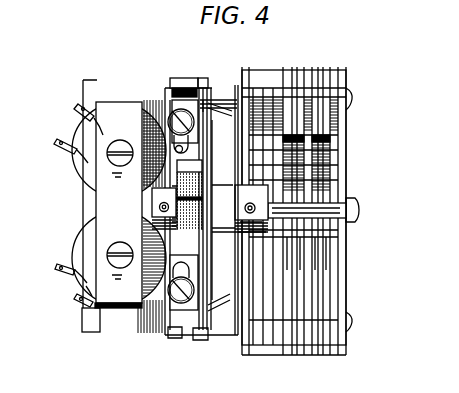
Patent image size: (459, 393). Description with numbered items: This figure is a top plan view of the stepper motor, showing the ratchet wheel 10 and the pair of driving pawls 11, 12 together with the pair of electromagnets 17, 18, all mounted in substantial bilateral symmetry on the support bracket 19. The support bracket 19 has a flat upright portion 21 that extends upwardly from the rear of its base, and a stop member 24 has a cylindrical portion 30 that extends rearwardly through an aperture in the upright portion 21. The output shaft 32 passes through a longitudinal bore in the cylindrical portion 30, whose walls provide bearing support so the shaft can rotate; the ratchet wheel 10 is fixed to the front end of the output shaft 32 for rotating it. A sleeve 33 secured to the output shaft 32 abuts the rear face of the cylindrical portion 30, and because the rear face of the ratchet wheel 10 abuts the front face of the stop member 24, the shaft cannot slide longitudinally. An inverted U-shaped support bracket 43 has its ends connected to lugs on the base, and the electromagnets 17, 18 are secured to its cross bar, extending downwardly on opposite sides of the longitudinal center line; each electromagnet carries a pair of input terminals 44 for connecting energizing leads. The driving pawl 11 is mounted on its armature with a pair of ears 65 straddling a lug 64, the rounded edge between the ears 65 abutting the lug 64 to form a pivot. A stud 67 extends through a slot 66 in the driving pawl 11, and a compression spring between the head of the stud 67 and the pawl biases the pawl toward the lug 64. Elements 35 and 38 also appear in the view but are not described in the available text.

The ratchet wheel 10 is at (153, 198).
The driving pawl 11 is at (161, 105).
The driving pawl 12 is at (176, 302).
The electromagnet 17 is at (88, 165).
The electromagnet 18 is at (85, 248).
The support bracket 19 is at (213, 152).
The flat upright portion 21 is at (208, 187).
The stop member 24 is at (187, 195).
The cylindrical portion 30 is at (219, 215).
The output shaft 32 is at (327, 200).
The sleeve 33 is at (247, 243).
The plate stack 35 is at (348, 258).
The housing 38 is at (29, 5).
The inverted U-shaped support bracket 43 is at (103, 213).
The input terminals 44 is at (78, 115).
The lug 64 is at (177, 97).
The ears 65 is at (163, 100).
The slot 66 is at (188, 152).
The stud 67 is at (188, 117).